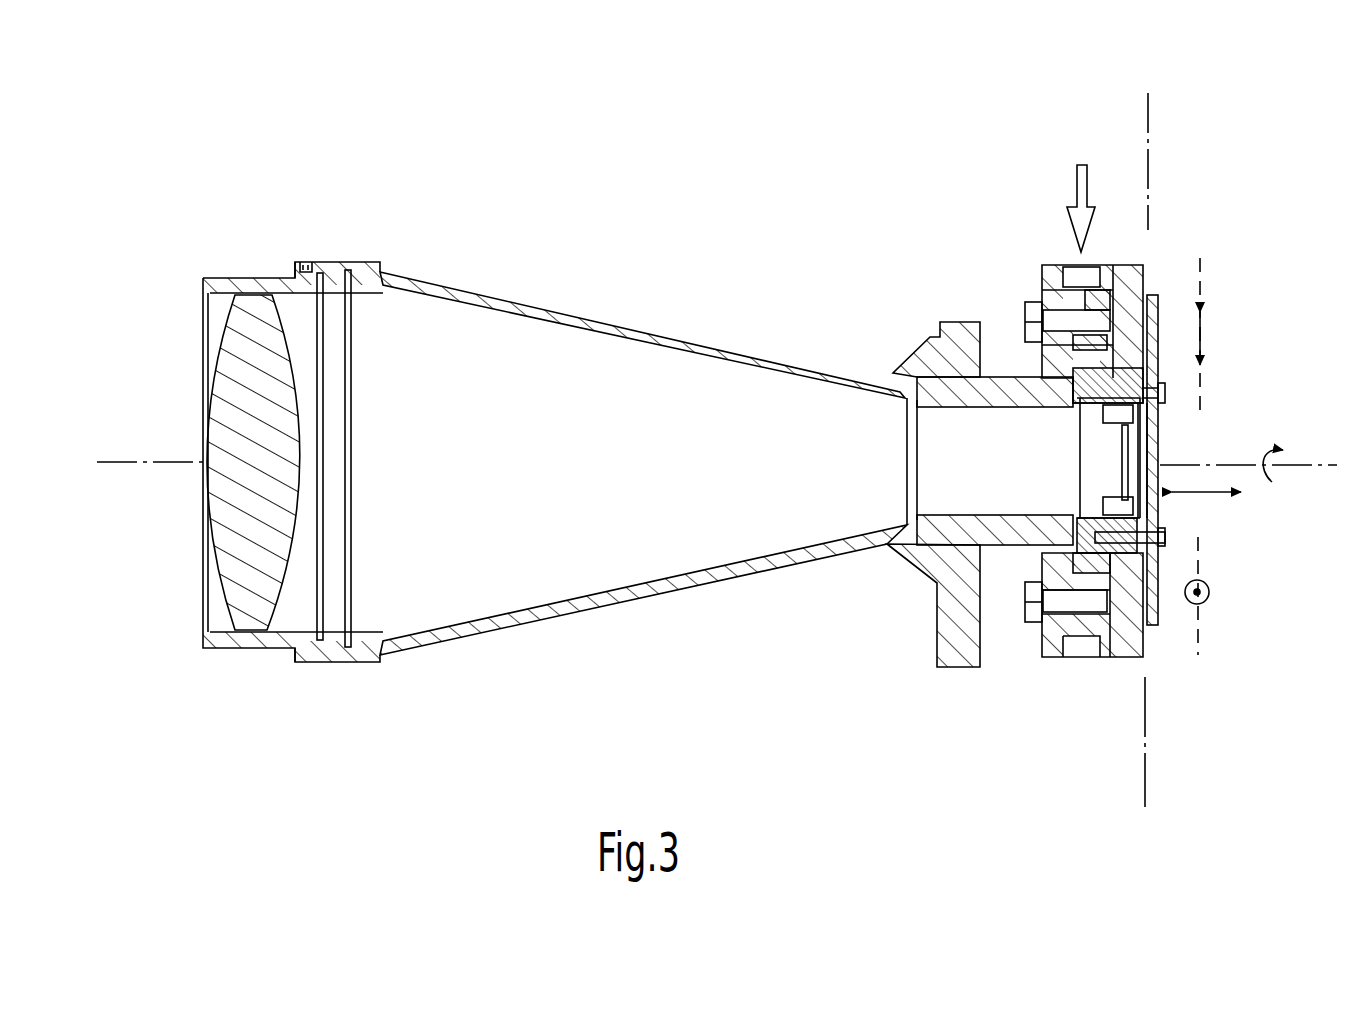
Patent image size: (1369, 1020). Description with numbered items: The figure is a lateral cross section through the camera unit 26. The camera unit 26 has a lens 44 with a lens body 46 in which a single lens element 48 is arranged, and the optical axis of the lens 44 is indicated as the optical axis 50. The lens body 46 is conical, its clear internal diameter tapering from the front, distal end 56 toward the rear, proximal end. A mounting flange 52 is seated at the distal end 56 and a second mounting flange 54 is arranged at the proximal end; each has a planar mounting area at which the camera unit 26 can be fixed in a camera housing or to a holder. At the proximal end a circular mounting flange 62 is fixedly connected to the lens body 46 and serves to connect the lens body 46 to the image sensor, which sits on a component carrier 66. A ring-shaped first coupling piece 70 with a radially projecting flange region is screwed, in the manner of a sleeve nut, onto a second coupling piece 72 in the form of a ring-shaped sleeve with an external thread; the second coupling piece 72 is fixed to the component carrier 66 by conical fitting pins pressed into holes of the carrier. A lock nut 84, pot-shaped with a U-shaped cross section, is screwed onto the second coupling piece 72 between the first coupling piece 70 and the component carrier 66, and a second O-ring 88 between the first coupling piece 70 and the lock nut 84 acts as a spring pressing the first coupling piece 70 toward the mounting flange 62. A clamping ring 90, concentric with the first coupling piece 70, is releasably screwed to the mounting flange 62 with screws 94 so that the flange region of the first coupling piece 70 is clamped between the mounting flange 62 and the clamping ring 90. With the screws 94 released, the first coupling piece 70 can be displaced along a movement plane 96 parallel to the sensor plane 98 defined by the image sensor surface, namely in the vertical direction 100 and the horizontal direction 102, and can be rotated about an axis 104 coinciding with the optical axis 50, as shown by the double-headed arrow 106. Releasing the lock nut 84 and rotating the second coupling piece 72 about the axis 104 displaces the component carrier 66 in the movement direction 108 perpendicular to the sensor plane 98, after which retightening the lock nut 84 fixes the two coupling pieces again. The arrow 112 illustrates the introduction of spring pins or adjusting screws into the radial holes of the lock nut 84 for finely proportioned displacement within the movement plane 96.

The camera unit 26 is at (447, 180).
The lens 44 is at (247, 694).
The lens body 46 is at (500, 620).
The lens element 48 is at (237, 567).
The optical axis 50 is at (127, 463).
The mounting flange 52 is at (366, 672).
The mounting flange 54 is at (960, 662).
The front (distal) end 56 is at (224, 272).
The circular mounting flange 62 is at (1043, 560).
The component carrier 66 is at (1153, 603).
The first coupling piece 70 is at (1040, 358).
The second coupling piece 72 is at (1127, 345).
The lock nut 84 is at (1130, 643).
The second O-ring 88 is at (1153, 558).
The clamping ring 90 is at (1095, 615).
The screws 94 is at (1037, 297).
The movement plane 96 is at (1205, 272).
The sensor plane 98 is at (1150, 152).
The vertical direction 100 is at (1202, 338).
The horizontal direction 102 is at (1213, 593).
The axis 104 is at (1318, 465).
The double-headed arrow (rotational movement) 106 is at (1263, 457).
The movement direction 108 is at (1203, 492).
The arrow 112 is at (1075, 182).